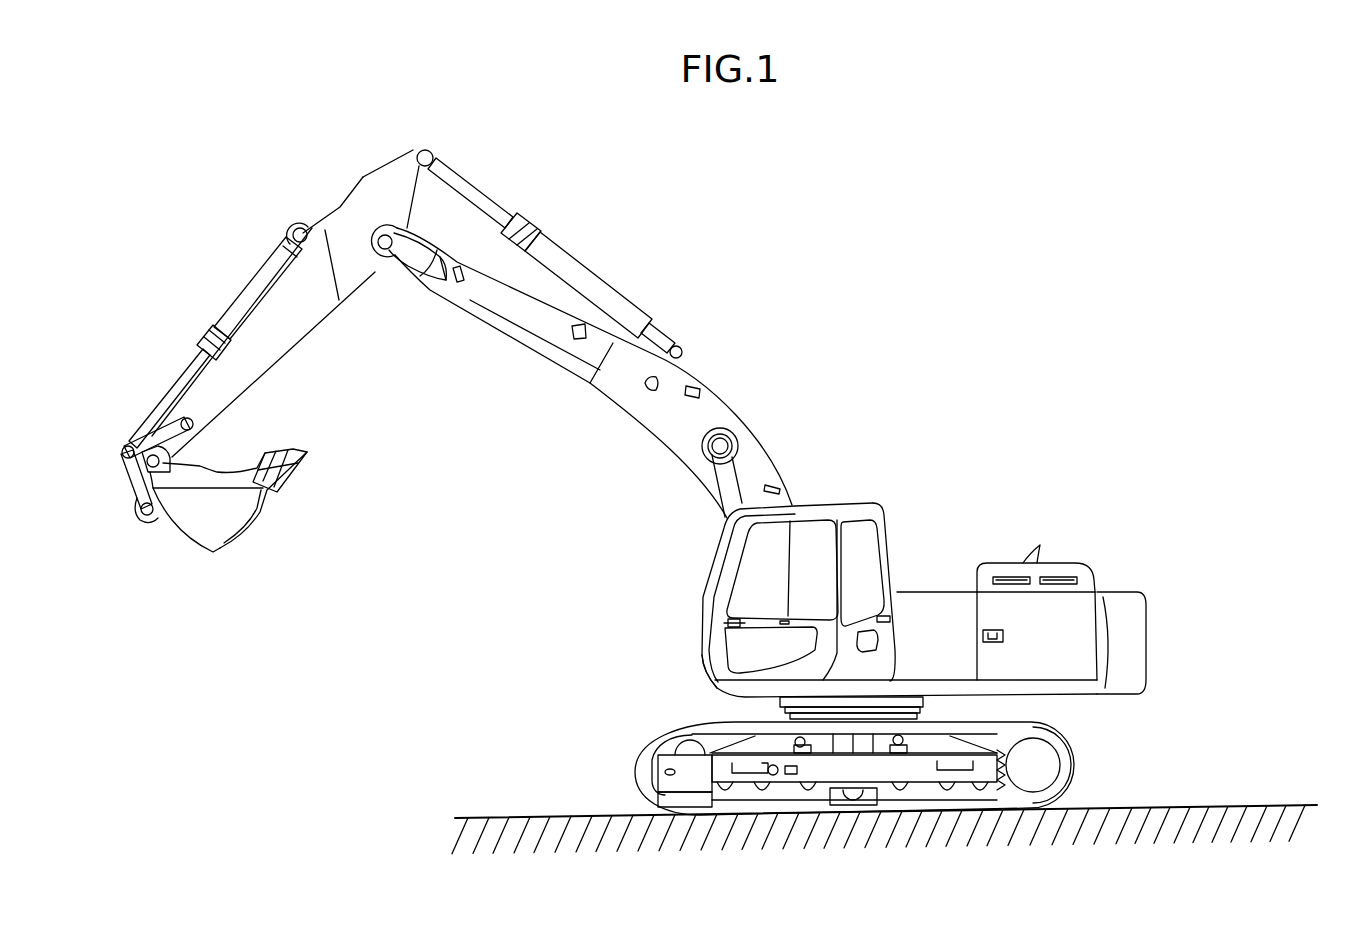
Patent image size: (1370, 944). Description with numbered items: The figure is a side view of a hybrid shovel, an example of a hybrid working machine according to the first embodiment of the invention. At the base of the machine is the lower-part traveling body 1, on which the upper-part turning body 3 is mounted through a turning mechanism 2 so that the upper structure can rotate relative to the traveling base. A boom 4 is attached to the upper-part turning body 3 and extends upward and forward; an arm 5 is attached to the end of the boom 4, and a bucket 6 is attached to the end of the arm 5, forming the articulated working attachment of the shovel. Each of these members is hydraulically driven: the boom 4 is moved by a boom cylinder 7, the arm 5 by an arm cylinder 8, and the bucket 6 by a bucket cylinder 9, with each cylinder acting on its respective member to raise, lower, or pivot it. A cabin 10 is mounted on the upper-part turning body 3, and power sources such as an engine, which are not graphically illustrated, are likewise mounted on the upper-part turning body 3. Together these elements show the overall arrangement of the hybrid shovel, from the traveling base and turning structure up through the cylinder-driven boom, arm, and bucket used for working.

The lower-part traveling body 1 is at (637, 763).
The turning mechanism 2 is at (880, 706).
The upper-part turning body 3 is at (940, 592).
The boom 4 is at (625, 398).
The arm 5 is at (307, 318).
The bucket 6 is at (212, 545).
The boom cylinder 7 is at (733, 480).
The arm cylinder 8 is at (612, 297).
The bucket cylinder 9 is at (245, 306).
The cabin 10 is at (878, 501).